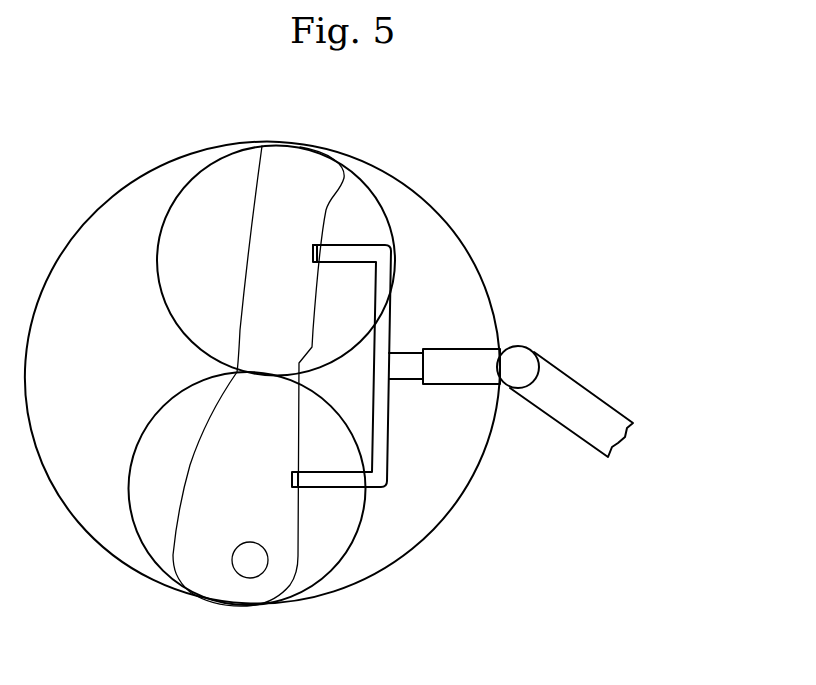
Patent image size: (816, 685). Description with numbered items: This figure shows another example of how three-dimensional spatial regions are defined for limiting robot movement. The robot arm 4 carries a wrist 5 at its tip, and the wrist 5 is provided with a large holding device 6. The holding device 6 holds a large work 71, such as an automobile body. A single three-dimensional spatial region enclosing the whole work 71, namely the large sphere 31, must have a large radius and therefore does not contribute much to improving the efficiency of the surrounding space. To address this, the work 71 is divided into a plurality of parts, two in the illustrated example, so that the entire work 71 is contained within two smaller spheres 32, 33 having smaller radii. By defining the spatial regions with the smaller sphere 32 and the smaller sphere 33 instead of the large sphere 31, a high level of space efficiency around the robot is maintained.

The sphere S31 31 is at (428, 200).
The smaller sphere S32 32 is at (191, 180).
The smaller sphere S33 33 is at (351, 548).
The work 71 is at (258, 281).
The holding device 6 is at (388, 435).
The wrist 5 is at (450, 363).
The arm 4 is at (582, 397).